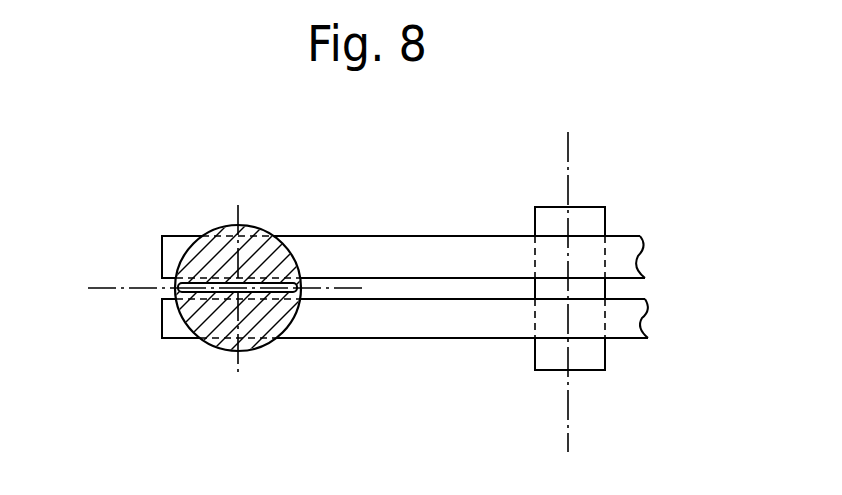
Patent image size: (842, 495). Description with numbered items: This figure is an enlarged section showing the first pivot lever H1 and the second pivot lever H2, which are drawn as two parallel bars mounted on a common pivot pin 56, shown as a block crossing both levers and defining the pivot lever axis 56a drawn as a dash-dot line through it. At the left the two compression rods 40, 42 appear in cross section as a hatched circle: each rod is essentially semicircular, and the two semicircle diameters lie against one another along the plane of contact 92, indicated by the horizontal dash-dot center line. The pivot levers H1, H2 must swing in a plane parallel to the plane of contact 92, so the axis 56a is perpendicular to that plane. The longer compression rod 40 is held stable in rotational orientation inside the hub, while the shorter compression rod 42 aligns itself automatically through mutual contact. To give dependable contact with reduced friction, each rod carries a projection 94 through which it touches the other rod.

The compression rod 40 is at (250, 227).
The compression rod 42 is at (250, 348).
The plane of contact 92 is at (127, 287).
The projection 94 is at (296, 265).
The pivot pin 56 is at (604, 217).
The pivot lever axis 56a is at (568, 132).
The first pivot lever H1 is at (418, 243).
The second pivot lever H2 is at (393, 339).